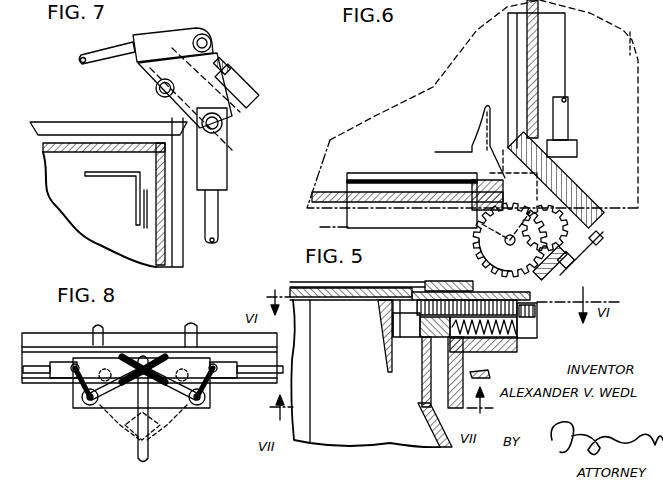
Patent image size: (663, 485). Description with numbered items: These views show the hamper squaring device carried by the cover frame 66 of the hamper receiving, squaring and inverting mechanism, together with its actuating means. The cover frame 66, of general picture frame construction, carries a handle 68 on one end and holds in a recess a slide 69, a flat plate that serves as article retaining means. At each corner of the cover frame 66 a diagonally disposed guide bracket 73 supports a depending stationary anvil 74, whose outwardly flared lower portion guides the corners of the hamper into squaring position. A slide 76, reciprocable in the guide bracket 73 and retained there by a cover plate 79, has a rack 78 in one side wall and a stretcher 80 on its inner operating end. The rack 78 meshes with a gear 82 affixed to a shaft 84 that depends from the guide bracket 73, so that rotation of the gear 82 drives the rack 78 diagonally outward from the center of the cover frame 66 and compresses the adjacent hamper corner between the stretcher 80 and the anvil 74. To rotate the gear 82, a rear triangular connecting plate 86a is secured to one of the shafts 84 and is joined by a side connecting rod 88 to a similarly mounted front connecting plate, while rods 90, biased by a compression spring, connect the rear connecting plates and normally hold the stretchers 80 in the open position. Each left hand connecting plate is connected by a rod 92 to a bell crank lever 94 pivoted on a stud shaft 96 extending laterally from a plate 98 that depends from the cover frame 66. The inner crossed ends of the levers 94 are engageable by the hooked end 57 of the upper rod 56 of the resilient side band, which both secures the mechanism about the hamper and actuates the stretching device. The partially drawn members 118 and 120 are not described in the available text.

In FIG. 8, the upper rod 56 is at (148, 458).
In FIG. 8, the hooked upper end 57 is at (143, 355).
In FIG. 7, the cover frame 66 is at (163, 257).
In FIG. 6, the cover frame 66 is at (540, 62).
In FIG. 5, the cover frame 66 is at (448, 393).
In FIG. 8, the cover frame 66 is at (227, 358).
In FIG. 8, the handle 68 is at (94, 330).
In FIG. 5, the slide 69 is at (440, 281).
In FIG. 7, the guide bracket 73 is at (240, 132).
In FIG. 6, the guide bracket 73 is at (570, 193).
In FIG. 5, the guide bracket 73 is at (518, 348).
In FIG. 7, the stationary anvil 74 is at (58, 173).
In FIG. 6, the stationary anvil 74 is at (375, 173).
In FIG. 5, the stationary anvil 74 is at (428, 425).
In FIG. 7, the slide 76 is at (143, 193).
In FIG. 6, the slide 76 is at (583, 250).
In FIG. 5, the slide 76 is at (526, 308).
In FIG. 6, the rack 78 is at (601, 232).
In FIG. 5, the rack 78 is at (477, 293).
In FIG. 7, the cover plate 79 is at (252, 107).
In FIG. 5, the cover plate 79 is at (510, 302).
In FIG. 7, the stretcher 80 is at (132, 177).
In FIG. 6, the stretcher 80 is at (463, 142).
In FIG. 5, the stretcher 80 is at (382, 337).
In FIG. 6, the gear 82 is at (488, 242).
In FIG. 7, the shaft 84 is at (156, 88).
In FIG. 6, the shaft 84 is at (482, 221).
In FIG. 7, the rear connecting plate 86a is at (210, 92).
In FIG. 6, the rear connecting plate 86a is at (566, 263).
In FIG. 5, the rear connecting plate 86a is at (488, 371).
In FIG. 7, the side connecting rod 88 is at (79, 61).
In FIG. 7, the rod 90 is at (218, 227).
In FIG. 6, the rod 90 is at (568, 120).
In FIG. 8, the rod 92 is at (33, 374).
In FIG. 8, the bell crank lever 94 is at (108, 407).
In FIG. 8, the stud shaft 96 is at (83, 398).
In FIG. 8, the plate 98 is at (127, 430).
In FIG. 6, the member 118 is at (629, 23).
In FIG. 6, the member 120 is at (652, 22).